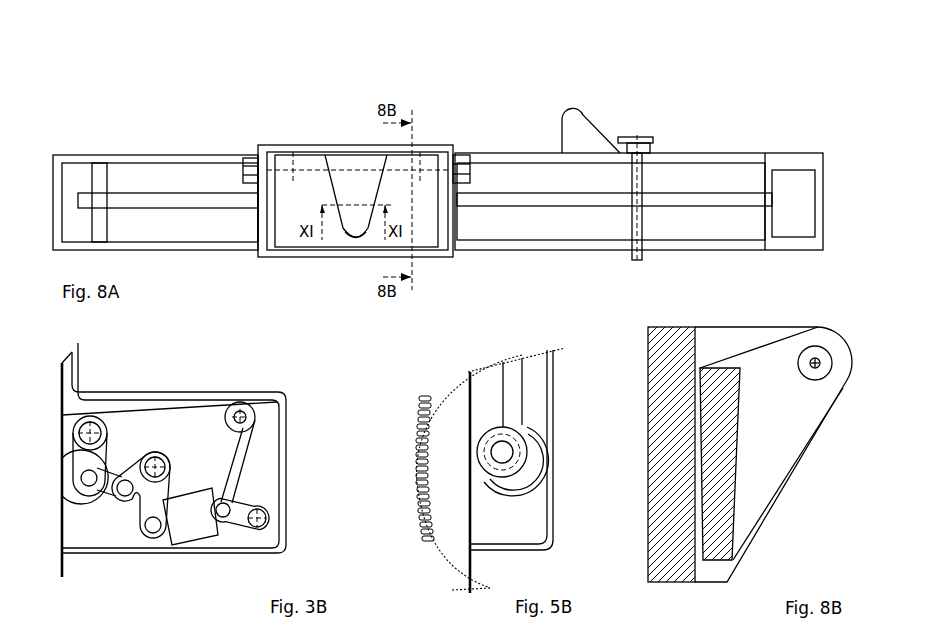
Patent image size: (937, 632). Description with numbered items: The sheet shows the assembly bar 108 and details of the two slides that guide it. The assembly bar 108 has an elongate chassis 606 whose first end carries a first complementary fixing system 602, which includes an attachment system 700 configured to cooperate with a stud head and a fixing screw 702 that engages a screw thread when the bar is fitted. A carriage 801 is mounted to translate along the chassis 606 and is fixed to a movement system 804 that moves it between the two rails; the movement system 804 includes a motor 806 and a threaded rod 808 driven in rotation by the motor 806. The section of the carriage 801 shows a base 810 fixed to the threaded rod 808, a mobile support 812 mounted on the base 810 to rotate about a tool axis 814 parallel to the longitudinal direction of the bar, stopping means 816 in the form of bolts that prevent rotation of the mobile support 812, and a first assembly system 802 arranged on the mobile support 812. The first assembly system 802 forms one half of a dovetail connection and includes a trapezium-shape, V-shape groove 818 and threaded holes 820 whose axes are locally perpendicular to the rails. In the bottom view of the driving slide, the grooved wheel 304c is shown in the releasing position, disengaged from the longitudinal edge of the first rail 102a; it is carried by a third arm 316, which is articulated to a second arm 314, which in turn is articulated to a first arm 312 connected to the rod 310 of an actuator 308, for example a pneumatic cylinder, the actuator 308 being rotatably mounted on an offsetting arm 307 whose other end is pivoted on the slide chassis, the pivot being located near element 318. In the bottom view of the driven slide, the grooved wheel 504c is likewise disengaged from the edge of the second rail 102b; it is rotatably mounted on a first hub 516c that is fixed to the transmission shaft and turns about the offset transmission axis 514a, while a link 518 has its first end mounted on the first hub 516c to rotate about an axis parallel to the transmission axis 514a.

In FIG. 8A, the assembly bar 108 is at (107, 107).
In FIG. 8A, the chassis 606 is at (170, 158).
In FIG. 8A, the carriage 801 is at (277, 138).
In FIG. 8B, the carriage 801 is at (847, 528).
In FIG. 8A, the first assembly system 802 is at (328, 99).
In FIG. 8A, the base 810 is at (253, 225).
In FIG. 8B, the base 810 is at (673, 342).
In FIG. 8A, the mobile support 812 is at (273, 220).
In FIG. 8B, the mobile support 812 is at (778, 347).
In FIG. 8A, the tool axis 814 is at (338, 152).
In FIG. 8B, the tool axis 814 is at (818, 372).
In FIG. 8A, the stopping means 816 is at (464, 152).
In FIG. 8A, the groove 818 is at (348, 240).
In FIG. 8A, the threaded holes 820 is at (417, 148).
In FIG. 8A, the first complementary fixing system 602 is at (573, 92).
In FIG. 8A, the attachment system 700 is at (575, 128).
In FIG. 8A, the fixing screw 702 is at (655, 138).
In FIG. 8A, the movement system 804 is at (808, 92).
In FIG. 8A, the motor 806 is at (800, 178).
In FIG. 8A, the threaded rod 808 is at (700, 200).
In FIG. 3B, the first rail 102a is at (72, 583).
In FIG. 3B, the grooved wheel 304c is at (82, 493).
In FIG. 3B, the offsetting arm 307 is at (242, 528).
In FIG. 3B, the actuator 308 is at (193, 525).
In FIG. 3B, the rod 310 is at (177, 540).
In FIG. 3B, the first arm 312 is at (118, 477).
In FIG. 3B, the second arm 314 is at (128, 462).
In FIG. 3B, the third arm 316 is at (116, 466).
In FIG. 3B, the pivot 318 is at (248, 417).
In FIG. 5B, the second rail 102b is at (445, 555).
In FIG. 5B, the grooved wheel 504c is at (480, 430).
In FIG. 5B, the transmission axis 514a is at (520, 495).
In FIG. 5B, the first hub 516c is at (537, 457).
In FIG. 5B, the link 518 is at (511, 383).